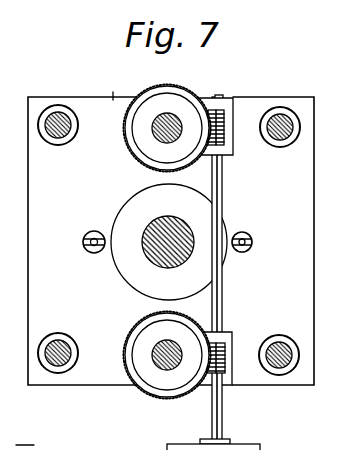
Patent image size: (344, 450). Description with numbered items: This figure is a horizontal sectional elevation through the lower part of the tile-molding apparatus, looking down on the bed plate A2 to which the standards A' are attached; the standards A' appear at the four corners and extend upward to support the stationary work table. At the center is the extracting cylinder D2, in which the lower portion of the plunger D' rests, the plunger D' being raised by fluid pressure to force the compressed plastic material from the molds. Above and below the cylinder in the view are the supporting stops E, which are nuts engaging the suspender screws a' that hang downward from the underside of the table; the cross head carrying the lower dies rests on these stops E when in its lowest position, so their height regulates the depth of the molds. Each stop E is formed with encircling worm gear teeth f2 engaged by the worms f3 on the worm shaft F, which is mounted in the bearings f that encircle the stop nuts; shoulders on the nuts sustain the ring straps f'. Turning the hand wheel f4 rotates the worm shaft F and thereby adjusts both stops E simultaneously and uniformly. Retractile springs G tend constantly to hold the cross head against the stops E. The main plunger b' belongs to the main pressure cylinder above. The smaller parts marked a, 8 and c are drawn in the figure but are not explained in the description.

The bed plate A2 is at (171, 238).
The standards A' is at (171, 235).
The screw a is at (91, 259).
The suspender screws a' is at (136, 244).
The extracting cylinder D2 is at (136, 199).
The plunger D' is at (168, 231).
The supporting stops E is at (167, 242).
The worm shaft F is at (244, 179).
The bearings f is at (221, 241).
The ring straps f' is at (175, 242).
The worm gear teeth f2 is at (149, 92).
The worms f3 is at (228, 123).
The hand wheel f4 is at (218, 436).
The retractile springs G is at (257, 234).
The pin 8 is at (124, 127).
The main plunger b' is at (57, 440).
The link c is at (17, 442).